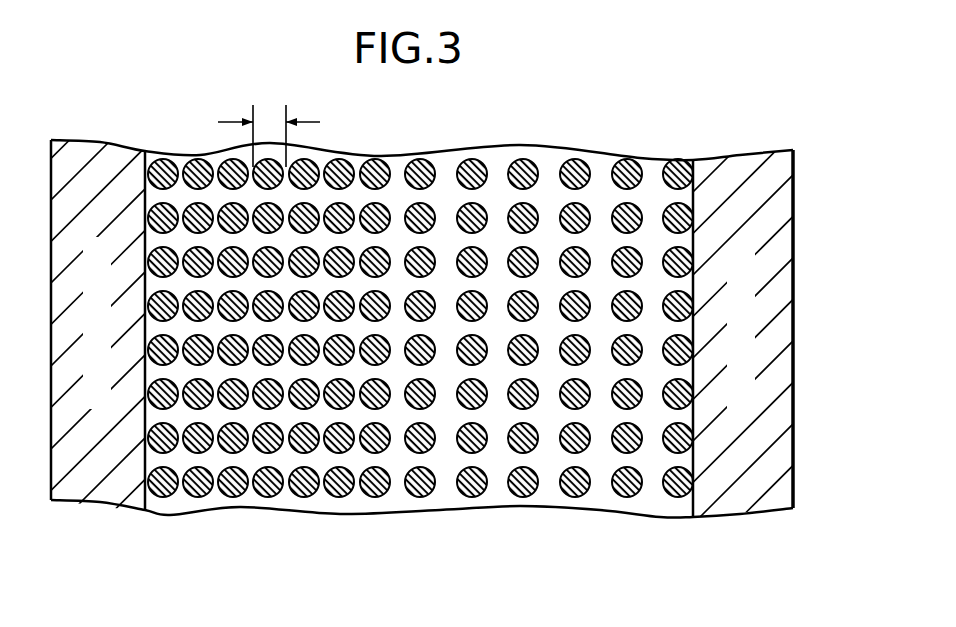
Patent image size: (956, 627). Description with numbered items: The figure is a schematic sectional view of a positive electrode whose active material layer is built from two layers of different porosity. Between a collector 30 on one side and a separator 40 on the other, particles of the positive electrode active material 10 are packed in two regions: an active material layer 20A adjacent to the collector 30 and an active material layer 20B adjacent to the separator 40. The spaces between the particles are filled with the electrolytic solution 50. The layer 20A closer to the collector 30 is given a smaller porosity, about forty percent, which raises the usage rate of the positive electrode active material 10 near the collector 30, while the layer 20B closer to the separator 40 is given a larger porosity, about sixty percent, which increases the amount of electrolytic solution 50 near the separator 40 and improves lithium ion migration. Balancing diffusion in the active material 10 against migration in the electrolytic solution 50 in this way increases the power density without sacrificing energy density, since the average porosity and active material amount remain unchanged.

The positive electrode active material 10 is at (418, 348).
The active material layer 20A is at (143, 560).
The active material layer 20B is at (690, 560).
The collector 30 is at (98, 170).
The separator 40 is at (741, 175).
The electrolytic solution 50 is at (546, 203).